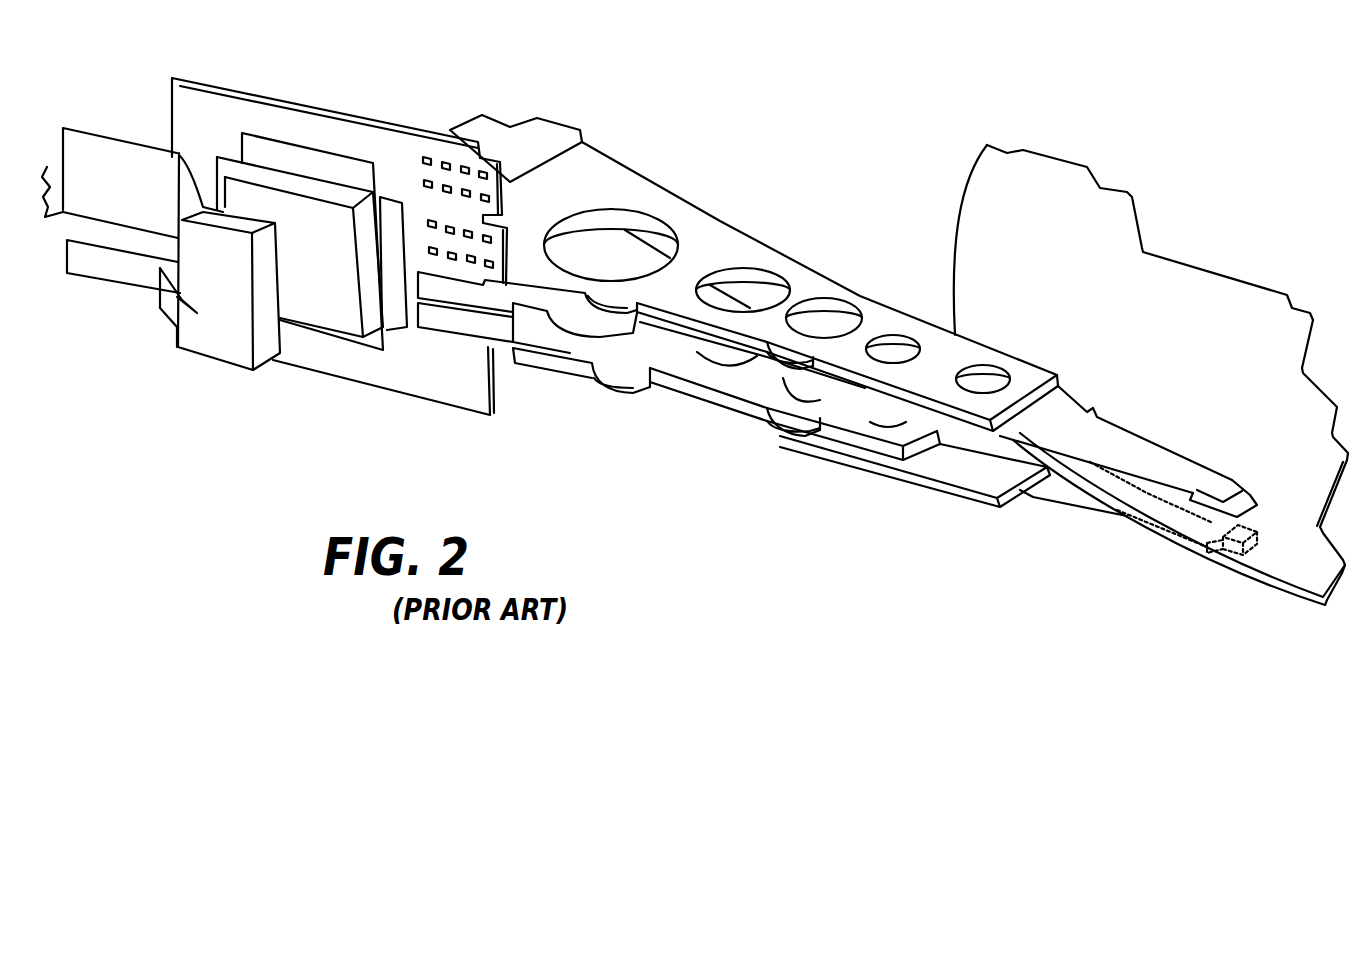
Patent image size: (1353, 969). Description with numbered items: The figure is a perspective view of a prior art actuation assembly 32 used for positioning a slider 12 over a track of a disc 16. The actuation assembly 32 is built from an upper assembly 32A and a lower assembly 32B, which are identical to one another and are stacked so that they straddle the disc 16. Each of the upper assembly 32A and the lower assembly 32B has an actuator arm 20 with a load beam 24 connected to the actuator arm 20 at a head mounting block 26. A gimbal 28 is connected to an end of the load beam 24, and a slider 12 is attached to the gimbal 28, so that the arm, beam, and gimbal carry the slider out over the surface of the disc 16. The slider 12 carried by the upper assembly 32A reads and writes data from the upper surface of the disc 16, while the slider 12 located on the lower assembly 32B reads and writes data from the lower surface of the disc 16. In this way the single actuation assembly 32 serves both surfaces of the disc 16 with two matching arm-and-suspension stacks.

The slider 12 is at (1210, 563).
The disc 16 is at (1090, 263).
The actuator arm 20 is at (673, 208).
The load beam 24 is at (1097, 413).
The head mounting block 26 is at (953, 465).
The gimbal 28 is at (1217, 478).
The actuation assembly 32 is at (920, 239).
The upper assembly 32A is at (797, 285).
The lower assembly 32B is at (770, 388).